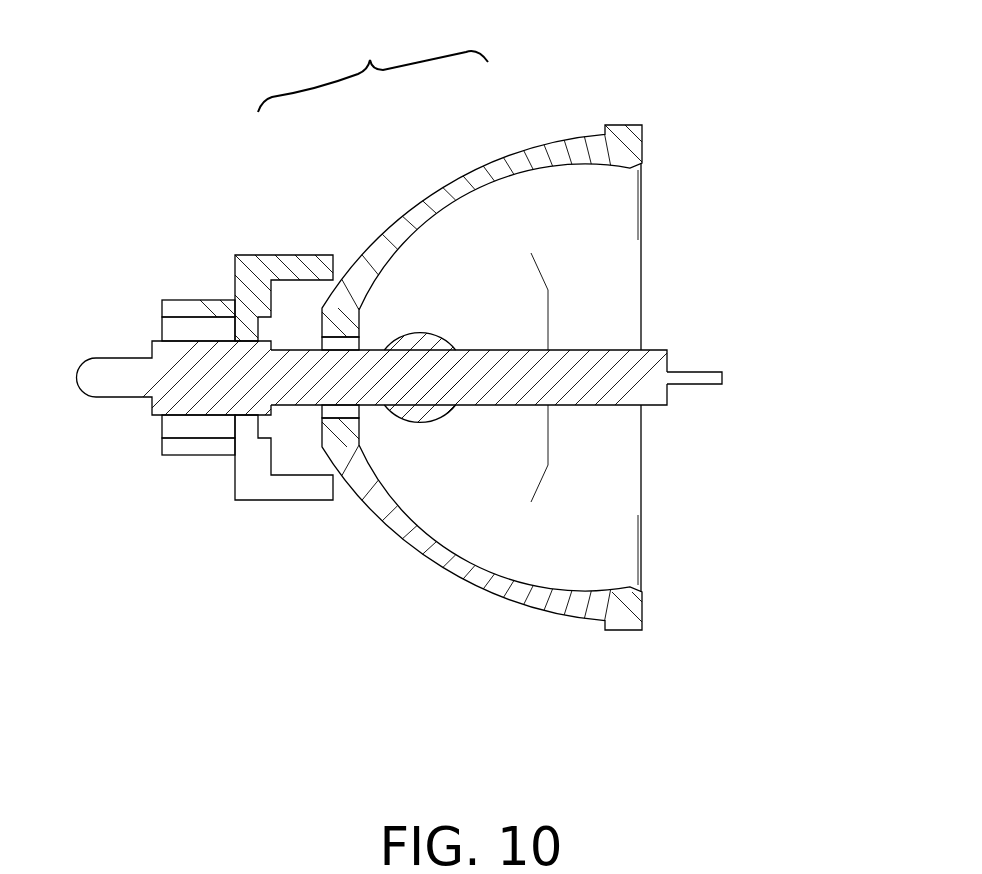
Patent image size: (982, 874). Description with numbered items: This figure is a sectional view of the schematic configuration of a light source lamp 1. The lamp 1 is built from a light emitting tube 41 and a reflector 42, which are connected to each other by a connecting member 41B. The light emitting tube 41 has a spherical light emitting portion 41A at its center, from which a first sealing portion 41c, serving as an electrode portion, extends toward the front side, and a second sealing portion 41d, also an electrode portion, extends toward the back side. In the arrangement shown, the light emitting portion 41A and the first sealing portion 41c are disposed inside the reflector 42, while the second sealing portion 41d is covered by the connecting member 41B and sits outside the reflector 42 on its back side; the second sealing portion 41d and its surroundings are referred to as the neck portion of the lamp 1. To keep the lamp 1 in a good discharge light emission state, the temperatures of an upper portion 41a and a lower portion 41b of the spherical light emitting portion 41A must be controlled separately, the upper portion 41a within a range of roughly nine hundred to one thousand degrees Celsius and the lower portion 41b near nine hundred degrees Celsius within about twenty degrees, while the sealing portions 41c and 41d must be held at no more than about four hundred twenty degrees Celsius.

The lamp 1 is at (373, 65).
The light emitting tube 41 is at (562, 368).
The light emitting portion 41A is at (411, 459).
The connecting member 41B is at (245, 270).
The upper portion 41a is at (417, 333).
The lower portion 41b is at (428, 425).
The first sealing portion 41c is at (615, 370).
The second sealing portion 41d is at (278, 370).
The reflector 42 is at (538, 163).